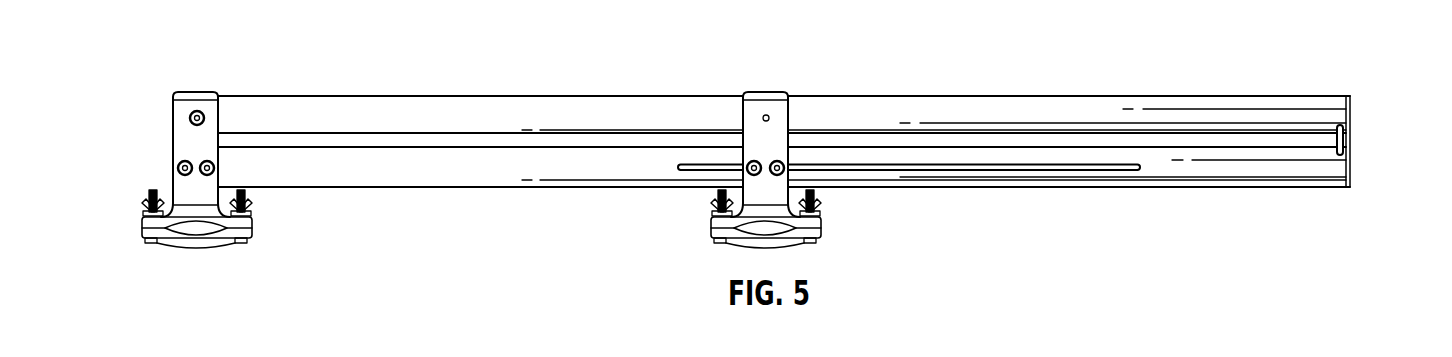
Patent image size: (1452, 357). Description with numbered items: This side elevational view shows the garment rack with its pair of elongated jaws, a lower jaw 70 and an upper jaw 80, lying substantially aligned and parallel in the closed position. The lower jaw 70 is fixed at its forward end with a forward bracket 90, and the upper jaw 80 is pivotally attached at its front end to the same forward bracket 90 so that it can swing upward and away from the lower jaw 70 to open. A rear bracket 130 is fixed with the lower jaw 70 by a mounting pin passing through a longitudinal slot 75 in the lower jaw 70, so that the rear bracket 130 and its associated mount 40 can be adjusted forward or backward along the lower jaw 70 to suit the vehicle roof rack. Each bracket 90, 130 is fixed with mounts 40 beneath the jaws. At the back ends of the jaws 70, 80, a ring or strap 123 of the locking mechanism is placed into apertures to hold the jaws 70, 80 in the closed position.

The mount 40 is at (262, 216).
The lower jaw 70 is at (1218, 170).
The longitudinal slot 75 is at (1050, 170).
The upper jaw 80 is at (625, 105).
The forward bracket 90 is at (207, 108).
The strap 123 is at (1347, 140).
The rear bracket 130 is at (777, 112).